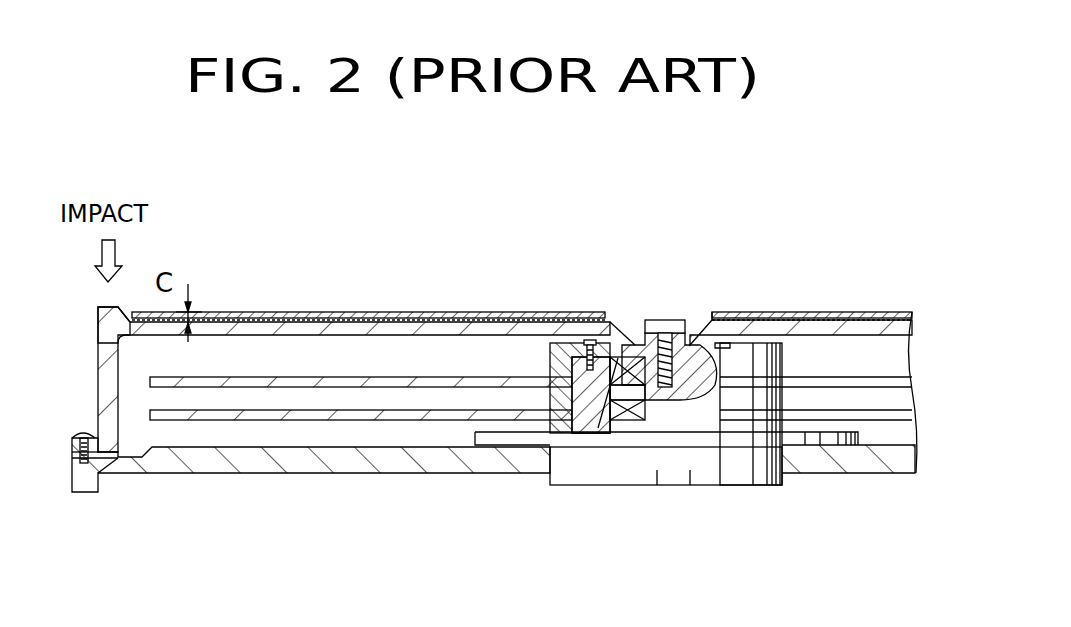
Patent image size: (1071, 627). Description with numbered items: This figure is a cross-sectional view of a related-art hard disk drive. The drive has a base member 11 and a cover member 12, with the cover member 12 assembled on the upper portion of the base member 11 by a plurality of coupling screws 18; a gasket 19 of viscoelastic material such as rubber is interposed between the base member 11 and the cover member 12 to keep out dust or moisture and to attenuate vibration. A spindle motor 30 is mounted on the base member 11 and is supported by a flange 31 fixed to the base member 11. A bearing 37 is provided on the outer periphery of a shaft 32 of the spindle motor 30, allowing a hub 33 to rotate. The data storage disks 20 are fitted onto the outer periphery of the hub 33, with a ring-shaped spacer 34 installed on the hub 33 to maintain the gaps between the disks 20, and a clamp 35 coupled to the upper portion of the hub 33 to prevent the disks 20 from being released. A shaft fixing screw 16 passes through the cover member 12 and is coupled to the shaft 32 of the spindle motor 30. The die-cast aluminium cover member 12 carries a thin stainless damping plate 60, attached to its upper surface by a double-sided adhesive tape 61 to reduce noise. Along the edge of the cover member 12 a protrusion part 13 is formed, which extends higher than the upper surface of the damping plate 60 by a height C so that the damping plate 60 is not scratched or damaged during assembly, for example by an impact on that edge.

The base member 11 is at (72, 473).
The cover member 12 is at (98, 348).
The protrusion part 13 is at (98, 312).
The shaft fixing screw 16 is at (664, 319).
The coupling screws 18 is at (80, 433).
The gasket 19 is at (116, 460).
The data storage disks 20 is at (337, 385).
The spindle motor 30 is at (694, 488).
The flange 31 is at (487, 440).
The shaft 32 is at (690, 332).
The hub 33 is at (600, 432).
The spacer 34 is at (560, 372).
The clamp 35 is at (567, 343).
The bearing 37 is at (592, 338).
The damping plate 60 is at (338, 314).
The double-sided adhesive tape 61 is at (410, 314).